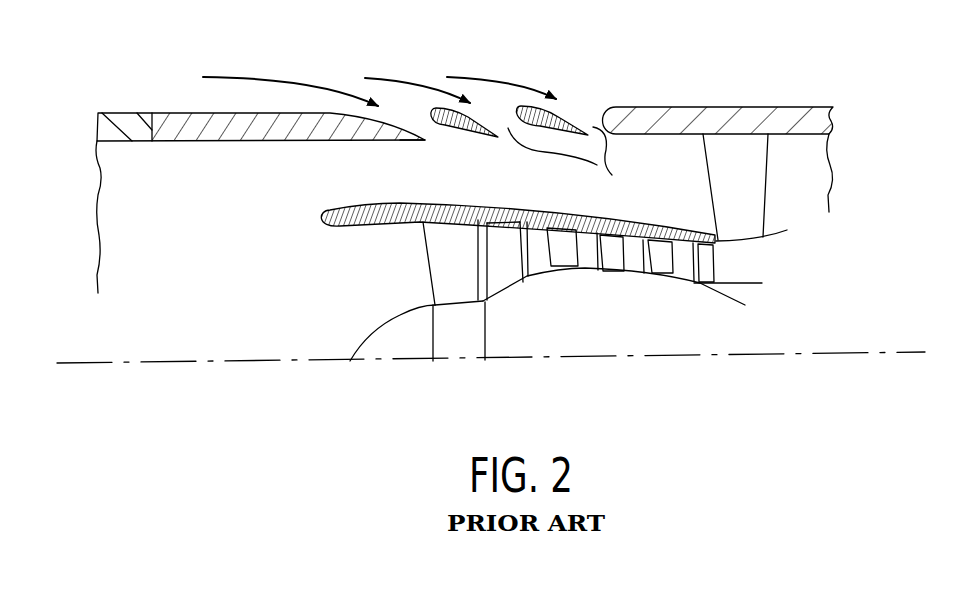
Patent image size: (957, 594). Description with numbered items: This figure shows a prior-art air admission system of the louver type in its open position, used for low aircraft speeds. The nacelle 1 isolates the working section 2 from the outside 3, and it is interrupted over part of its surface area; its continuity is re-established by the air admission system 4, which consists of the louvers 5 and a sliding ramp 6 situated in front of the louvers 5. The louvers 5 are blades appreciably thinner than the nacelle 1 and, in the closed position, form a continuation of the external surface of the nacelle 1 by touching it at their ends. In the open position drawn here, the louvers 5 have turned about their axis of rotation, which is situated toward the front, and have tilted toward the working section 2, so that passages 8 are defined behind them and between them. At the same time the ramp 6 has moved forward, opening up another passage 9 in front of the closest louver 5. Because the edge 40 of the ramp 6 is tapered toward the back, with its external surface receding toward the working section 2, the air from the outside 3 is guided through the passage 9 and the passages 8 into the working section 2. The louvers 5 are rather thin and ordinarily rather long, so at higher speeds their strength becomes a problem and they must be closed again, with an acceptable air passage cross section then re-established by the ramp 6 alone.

The nacelle 1 is at (124, 98).
The working section 2 is at (170, 188).
The outside 3 is at (753, 30).
The air admission system 4 is at (584, 92).
The louvers 5 is at (480, 118).
The sliding ramp 6 is at (265, 125).
The passages 8 is at (569, 162).
The passage 9 is at (412, 118).
The edge of the ramp 40 is at (421, 141).